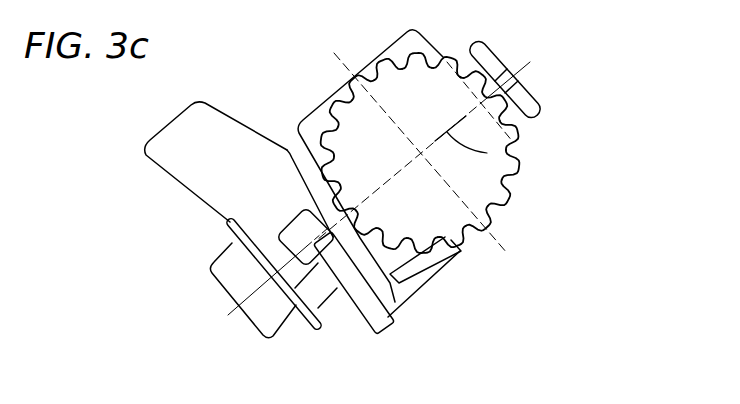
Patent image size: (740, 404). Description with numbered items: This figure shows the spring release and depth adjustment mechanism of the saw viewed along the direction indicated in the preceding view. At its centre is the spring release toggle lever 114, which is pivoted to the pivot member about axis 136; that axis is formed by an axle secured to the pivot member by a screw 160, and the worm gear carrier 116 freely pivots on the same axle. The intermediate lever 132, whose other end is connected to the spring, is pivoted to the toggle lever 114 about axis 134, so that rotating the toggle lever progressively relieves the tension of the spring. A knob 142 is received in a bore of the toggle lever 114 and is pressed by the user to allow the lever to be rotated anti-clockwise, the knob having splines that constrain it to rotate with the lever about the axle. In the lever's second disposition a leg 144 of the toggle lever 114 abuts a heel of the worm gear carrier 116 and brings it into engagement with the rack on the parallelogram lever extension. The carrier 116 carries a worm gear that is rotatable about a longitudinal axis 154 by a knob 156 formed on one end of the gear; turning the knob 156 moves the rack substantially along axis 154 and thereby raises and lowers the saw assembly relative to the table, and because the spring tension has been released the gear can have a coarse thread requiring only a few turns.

The spring release toggle lever 114 is at (172, 145).
The worm gear carrier 116 is at (310, 124).
The intermediate lever 132 is at (387, 332).
The axis 134 is at (317, 293).
The axis 136 is at (522, 157).
The knob 142 is at (262, 321).
The leg 144 is at (402, 272).
The longitudinal axis 154 is at (420, 153).
The knob 156 is at (517, 203).
The screw 160 is at (522, 86).